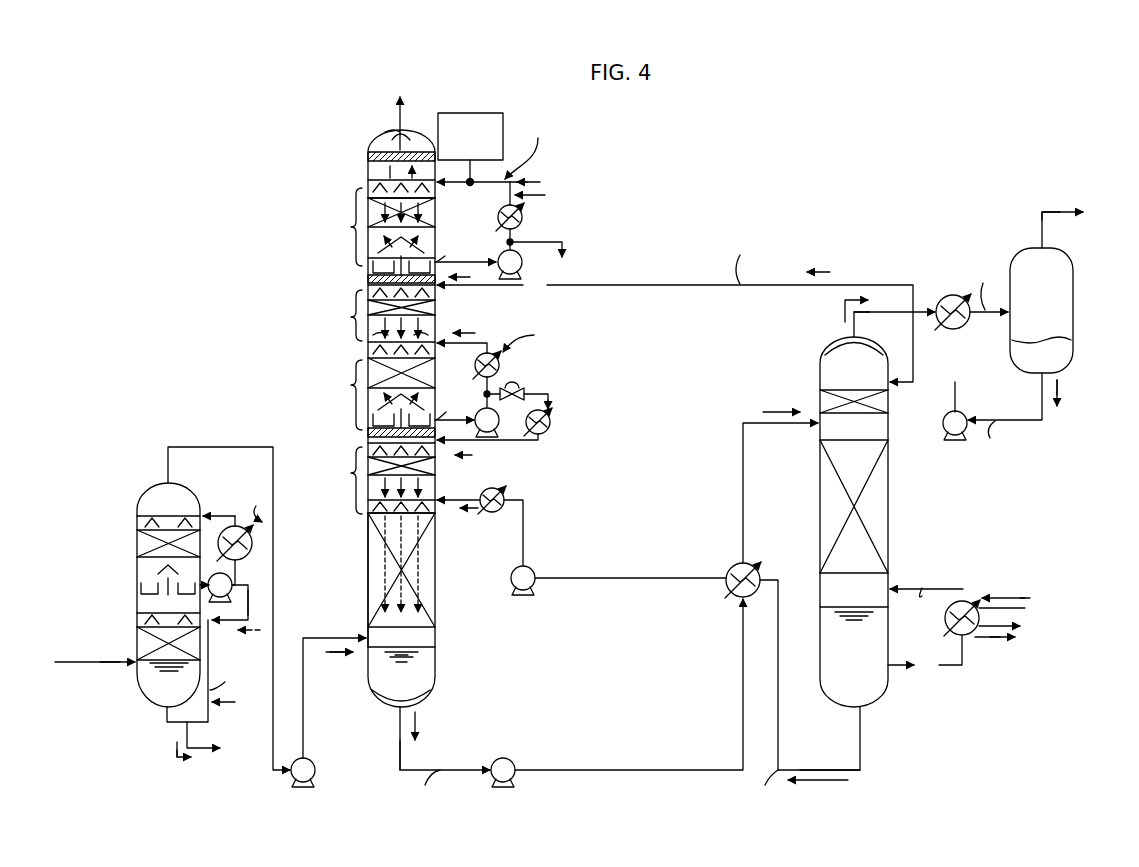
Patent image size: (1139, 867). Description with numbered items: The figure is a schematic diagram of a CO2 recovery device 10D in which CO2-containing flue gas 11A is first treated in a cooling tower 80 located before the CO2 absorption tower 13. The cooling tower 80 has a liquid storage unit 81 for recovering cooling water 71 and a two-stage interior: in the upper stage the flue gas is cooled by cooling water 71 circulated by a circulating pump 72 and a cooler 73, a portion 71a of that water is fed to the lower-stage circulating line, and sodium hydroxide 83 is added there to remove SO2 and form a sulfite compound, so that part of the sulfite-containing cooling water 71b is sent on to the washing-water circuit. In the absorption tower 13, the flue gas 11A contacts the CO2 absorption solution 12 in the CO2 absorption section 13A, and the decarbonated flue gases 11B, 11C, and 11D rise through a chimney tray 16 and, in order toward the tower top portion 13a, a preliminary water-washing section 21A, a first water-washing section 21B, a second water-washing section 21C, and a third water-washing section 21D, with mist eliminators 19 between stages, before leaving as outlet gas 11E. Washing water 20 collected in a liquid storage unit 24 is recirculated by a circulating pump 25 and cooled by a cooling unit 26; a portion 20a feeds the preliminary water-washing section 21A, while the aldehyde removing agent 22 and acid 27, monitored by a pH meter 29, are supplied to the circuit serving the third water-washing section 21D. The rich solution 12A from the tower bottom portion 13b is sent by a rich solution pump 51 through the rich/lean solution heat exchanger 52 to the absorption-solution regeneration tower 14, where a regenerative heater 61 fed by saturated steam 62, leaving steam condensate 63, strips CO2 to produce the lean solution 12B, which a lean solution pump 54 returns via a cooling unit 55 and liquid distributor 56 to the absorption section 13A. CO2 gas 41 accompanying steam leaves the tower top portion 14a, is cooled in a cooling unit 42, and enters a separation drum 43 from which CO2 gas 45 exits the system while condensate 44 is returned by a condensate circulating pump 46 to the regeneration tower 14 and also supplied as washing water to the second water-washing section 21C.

The CO2 recovery device 10D is at (783, 203).
The CO2-containing flue gas 11A is at (98, 664).
The decarbonated flue gas 11B is at (368, 514).
The decarbonated flue gas 11C is at (372, 430).
The decarbonated flue gas 11D is at (372, 268).
The outlet gas 11E is at (385, 132).
The CO2 absorption solution 12 is at (460, 510).
The rich solution 12A is at (418, 735).
The lean solution 12B is at (858, 780).
The CO2 absorption tower 13 is at (345, 160).
The tower top portion 13a is at (392, 140).
The tower bottom portion 13b is at (435, 680).
The CO2 absorption section 13A is at (366, 580).
The absorption-solution regeneration tower 14 is at (892, 495).
The tower top portion 14a is at (815, 350).
The chimney tray 16 is at (380, 240).
The mist eliminator 19 is at (385, 156).
The washing water 20 is at (432, 212).
The portion of the washing water 20a is at (555, 400).
The preliminary water-washing section 21A is at (358, 476).
The first water-washing section 21B is at (339, 395).
The second water-washing section 21C is at (339, 315).
The third water-washing section 21D is at (339, 227).
The aldehyde removing agent 22 is at (525, 212).
The liquid storage unit 24 is at (446, 256).
The circulating pump 25 is at (522, 258).
The cooling unit 26 is at (498, 358).
The acid 27 is at (510, 172).
The pH meter 29 is at (462, 114).
The CO2 gas accompanying steam 41 is at (845, 320).
The cooling unit 42 is at (948, 298).
The separation drum 43 is at (1075, 313).
The condensate 44 is at (1062, 384).
The CO2 gas 45 is at (1042, 212).
The condensate circulating pump 46 is at (958, 405).
The rich solution pump 51 is at (496, 782).
The rich/lean solution heat exchanger 52 is at (733, 565).
The lean solution pump 54 is at (535, 570).
The cooling unit 55 is at (505, 492).
The liquid distributor 56 is at (437, 500).
The regenerative heater 61 is at (965, 600).
The saturated steam 62 is at (1010, 598).
The steam condensate 63 is at (1000, 640).
The cooling water 71 is at (225, 505).
The portion of the cooling water 71a is at (252, 630).
The cooling water containing the sulfite compound 71b is at (177, 760).
The circulating pump 72 is at (250, 605).
The cooler 73 is at (234, 596).
The cooling tower 80 is at (130, 498).
The liquid storage unit 81 is at (140, 597).
The sodium hydroxide 83 is at (238, 705).